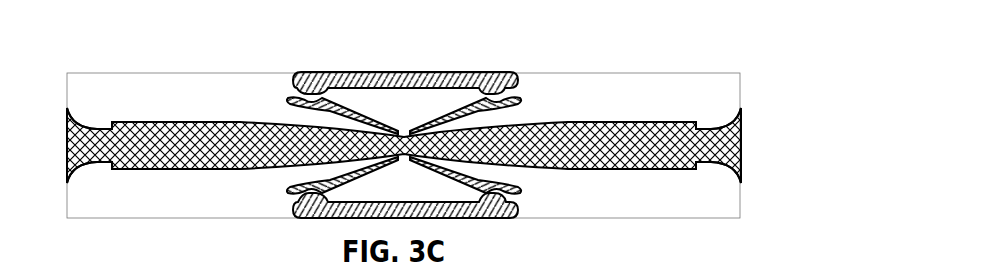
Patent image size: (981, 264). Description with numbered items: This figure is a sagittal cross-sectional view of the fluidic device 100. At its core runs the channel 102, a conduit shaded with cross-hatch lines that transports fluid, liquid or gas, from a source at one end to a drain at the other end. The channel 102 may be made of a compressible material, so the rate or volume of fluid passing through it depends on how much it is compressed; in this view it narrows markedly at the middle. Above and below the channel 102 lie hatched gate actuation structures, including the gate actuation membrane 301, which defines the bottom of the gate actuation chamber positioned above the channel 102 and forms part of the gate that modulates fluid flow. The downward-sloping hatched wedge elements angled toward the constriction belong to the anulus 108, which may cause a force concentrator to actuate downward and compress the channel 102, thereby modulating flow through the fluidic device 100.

The fluidic device 100 is at (137, 68).
The channel 102 is at (251, 169).
The gate actuation membrane 301 is at (482, 79).
The anulus lines 108 is at (520, 183).